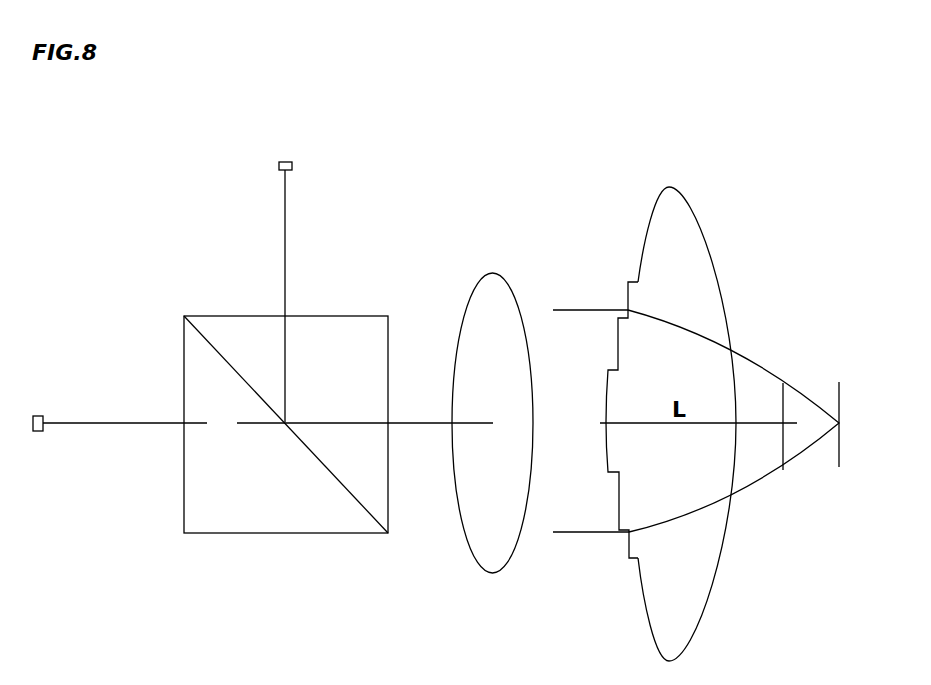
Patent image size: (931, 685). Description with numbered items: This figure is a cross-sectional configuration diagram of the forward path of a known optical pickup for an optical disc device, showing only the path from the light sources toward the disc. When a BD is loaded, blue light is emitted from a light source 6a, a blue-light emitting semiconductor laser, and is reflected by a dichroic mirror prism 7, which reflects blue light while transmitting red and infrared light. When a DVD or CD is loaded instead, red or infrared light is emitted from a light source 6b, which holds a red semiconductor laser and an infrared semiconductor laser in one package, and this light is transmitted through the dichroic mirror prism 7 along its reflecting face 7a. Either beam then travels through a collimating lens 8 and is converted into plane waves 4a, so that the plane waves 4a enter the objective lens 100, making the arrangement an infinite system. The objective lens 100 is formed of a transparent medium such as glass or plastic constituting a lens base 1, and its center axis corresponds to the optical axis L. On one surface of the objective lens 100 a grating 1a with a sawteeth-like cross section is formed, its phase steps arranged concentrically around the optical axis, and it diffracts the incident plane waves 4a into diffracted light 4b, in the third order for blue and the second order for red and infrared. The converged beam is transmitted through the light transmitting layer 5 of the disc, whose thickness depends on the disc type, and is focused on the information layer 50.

The objective lens 100 is at (696, 392).
The lens base 1 is at (682, 607).
The grating 1a is at (633, 278).
The plane waves 4a is at (591, 407).
The diffracted light 4b is at (733, 418).
The light transmitting layer 5 is at (823, 395).
The information layer 50 is at (852, 456).
The light source 6a is at (292, 165).
The light source 6b is at (37, 413).
The dichroic mirror prism 7 is at (332, 328).
The beam splitting surface 7a is at (358, 503).
The collimating lens 8 is at (488, 293).